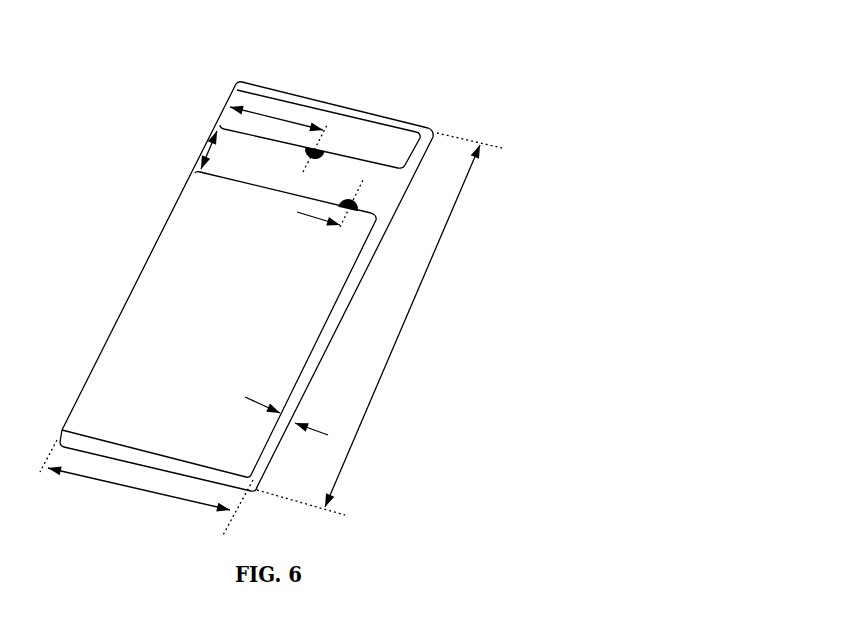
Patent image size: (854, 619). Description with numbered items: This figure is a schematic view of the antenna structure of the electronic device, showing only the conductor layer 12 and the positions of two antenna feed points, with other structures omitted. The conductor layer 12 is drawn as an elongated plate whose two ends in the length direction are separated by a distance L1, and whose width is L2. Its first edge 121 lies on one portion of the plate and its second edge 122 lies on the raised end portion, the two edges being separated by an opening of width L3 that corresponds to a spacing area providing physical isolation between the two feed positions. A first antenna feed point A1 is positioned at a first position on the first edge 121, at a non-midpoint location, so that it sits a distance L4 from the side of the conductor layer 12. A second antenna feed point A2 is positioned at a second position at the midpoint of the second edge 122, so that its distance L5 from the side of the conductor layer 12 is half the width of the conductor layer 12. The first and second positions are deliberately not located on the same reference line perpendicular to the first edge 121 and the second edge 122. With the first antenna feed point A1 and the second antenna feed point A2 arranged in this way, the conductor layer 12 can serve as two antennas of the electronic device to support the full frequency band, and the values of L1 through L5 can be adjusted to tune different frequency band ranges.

The conductor layer 12 is at (140, 274).
The first edge 121 is at (270, 190).
The second edge 122 is at (377, 161).
The first antenna feed point A1 is at (358, 205).
The second antenna feed point A2 is at (328, 146).
The distance between the two ends of the conductor layer L1 is at (379, 324).
The width of the conductor layer L2 is at (146, 488).
The opening width L3 is at (196, 150).
The distance from the first antenna feed point to the side L4 is at (333, 228).
The distance from the second antenna feed point to the side L5 is at (279, 267).